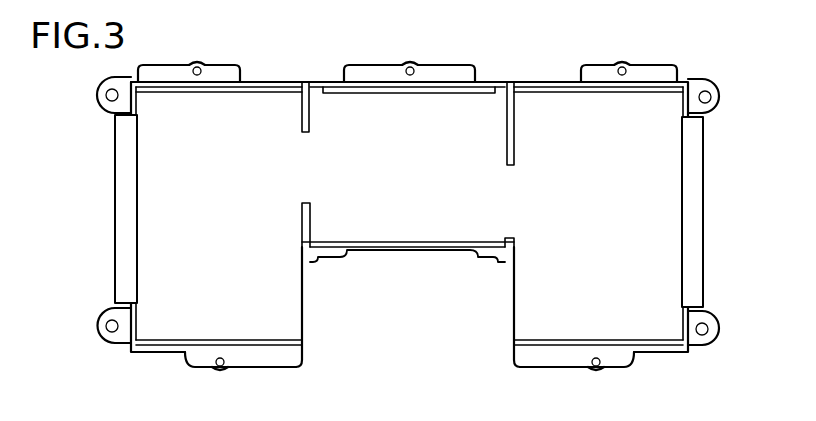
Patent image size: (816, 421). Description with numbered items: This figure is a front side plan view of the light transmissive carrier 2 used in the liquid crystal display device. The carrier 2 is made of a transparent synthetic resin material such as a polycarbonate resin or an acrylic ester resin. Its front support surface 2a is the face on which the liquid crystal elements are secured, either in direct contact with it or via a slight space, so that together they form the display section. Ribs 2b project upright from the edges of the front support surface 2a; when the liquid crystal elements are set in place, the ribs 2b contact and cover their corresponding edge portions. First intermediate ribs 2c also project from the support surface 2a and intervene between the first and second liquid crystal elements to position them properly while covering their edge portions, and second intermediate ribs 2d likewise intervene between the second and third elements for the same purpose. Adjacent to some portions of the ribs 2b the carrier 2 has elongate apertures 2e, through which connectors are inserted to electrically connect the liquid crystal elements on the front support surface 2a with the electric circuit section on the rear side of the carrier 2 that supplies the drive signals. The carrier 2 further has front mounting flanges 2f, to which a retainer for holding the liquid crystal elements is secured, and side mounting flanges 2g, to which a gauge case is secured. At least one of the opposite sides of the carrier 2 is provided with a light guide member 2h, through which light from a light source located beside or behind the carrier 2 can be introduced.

The light transmissive carrier 2 is at (491, 81).
The front support surface 2a is at (555, 270).
The ribs 2b is at (152, 84).
The first intermediate ribs 2c is at (513, 238).
The second intermediate ribs 2d is at (307, 126).
The elongate apertures 2e is at (340, 92).
The front mounting flanges 2f is at (198, 67).
The side mounting flanges 2g is at (99, 90).
The light guide member 2h is at (127, 217).